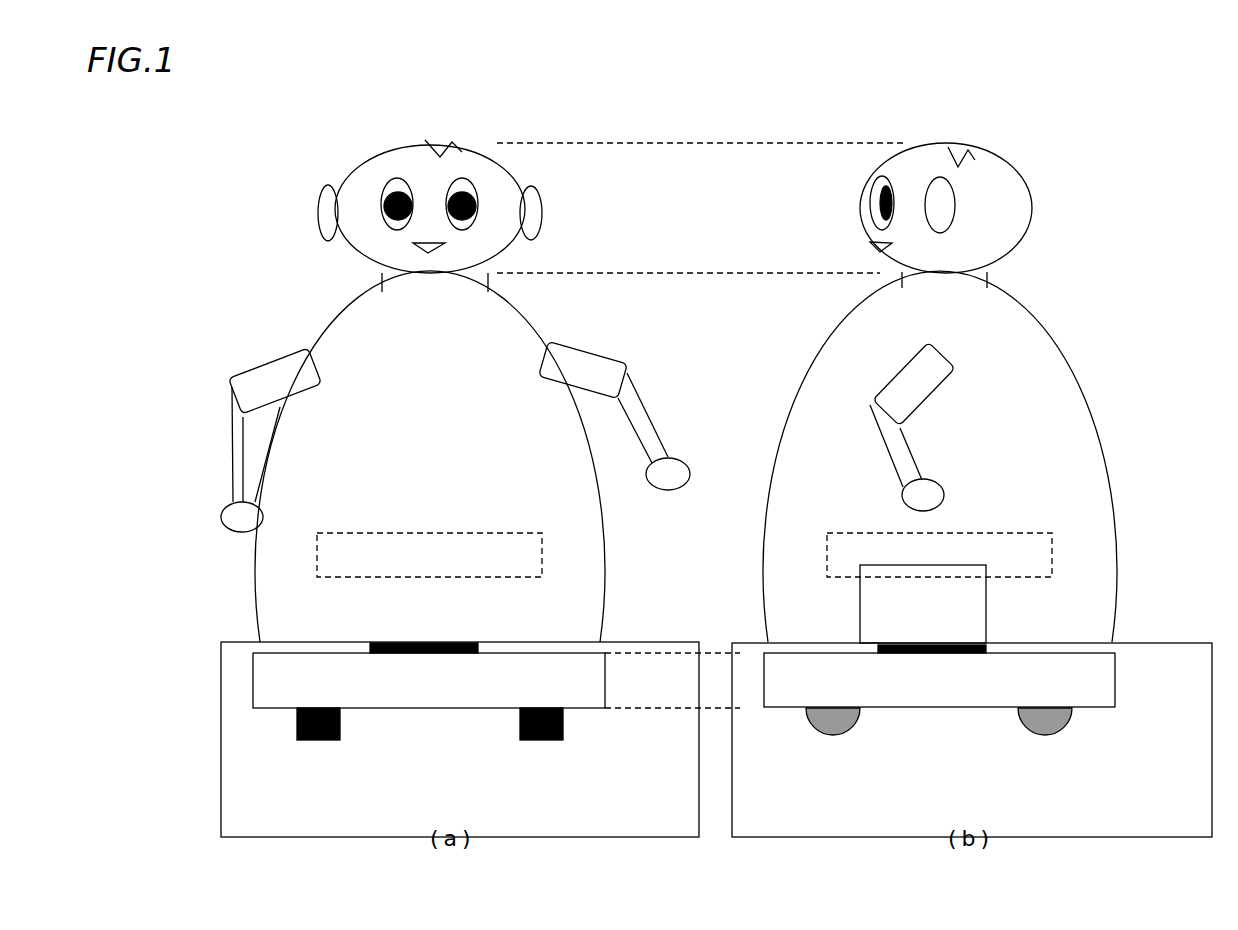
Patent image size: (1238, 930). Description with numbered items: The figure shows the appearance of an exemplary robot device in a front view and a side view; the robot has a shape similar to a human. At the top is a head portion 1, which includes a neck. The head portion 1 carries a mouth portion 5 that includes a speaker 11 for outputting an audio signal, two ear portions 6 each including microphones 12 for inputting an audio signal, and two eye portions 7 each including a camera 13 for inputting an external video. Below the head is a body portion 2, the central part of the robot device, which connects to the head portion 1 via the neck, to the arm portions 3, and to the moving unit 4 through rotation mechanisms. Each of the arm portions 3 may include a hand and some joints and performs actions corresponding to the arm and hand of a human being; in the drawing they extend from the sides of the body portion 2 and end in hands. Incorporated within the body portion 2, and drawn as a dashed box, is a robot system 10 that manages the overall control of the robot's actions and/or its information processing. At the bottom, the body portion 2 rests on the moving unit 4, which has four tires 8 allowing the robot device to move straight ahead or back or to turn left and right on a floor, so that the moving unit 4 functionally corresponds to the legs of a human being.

In FIG. 1A, the head portion 1 is at (360, 178).
In FIG. 1B, the head portion 1 is at (998, 175).
In FIG. 1A, the body portion 2 is at (510, 338).
In FIG. 1B, the body portion 2 is at (1030, 330).
In FIG. 1A, the arm portions 3 is at (232, 438).
In FIG. 1B, the arm portions 3 is at (912, 455).
In FIG. 1A, the moving unit 4 is at (607, 653).
In FIG. 1B, the moving unit 4 is at (1103, 665).
In FIG. 1A, the mouth portion 5 is at (363, 271).
In FIG. 1B, the mouth portion 5 is at (881, 247).
In FIG. 1A, the ear portions 6 is at (443, 218).
In FIG. 1B, the ear portions 6 is at (993, 162).
In FIG. 1A, the eye portions 7 is at (482, 167).
In FIG. 1B, the eye portions 7 is at (833, 217).
In FIG. 1A, the tires 8 is at (318, 717).
In FIG. 1B, the tires 8 is at (836, 732).
In FIG. 1A, the robot system 10 is at (500, 533).
In FIG. 1B, the robot system 10 is at (987, 533).
In FIG. 1A, the speaker 11 is at (425, 247).
In FIG. 1B, the speaker 11 is at (881, 247).
In FIG. 1A, the microphones 12 is at (318, 222).
In FIG. 1B, the microphones 12 is at (935, 190).
In FIG. 1A, the camera 13 is at (400, 178).
In FIG. 1B, the camera 13 is at (867, 205).